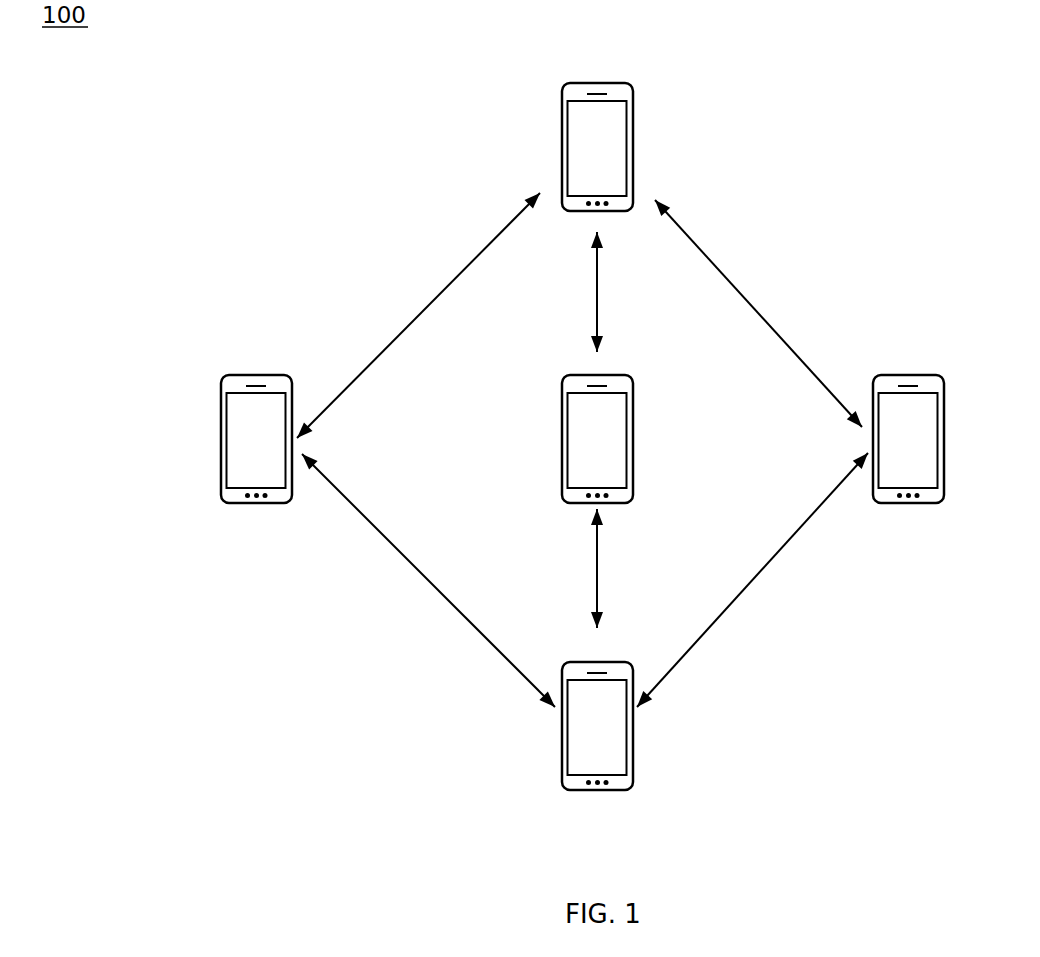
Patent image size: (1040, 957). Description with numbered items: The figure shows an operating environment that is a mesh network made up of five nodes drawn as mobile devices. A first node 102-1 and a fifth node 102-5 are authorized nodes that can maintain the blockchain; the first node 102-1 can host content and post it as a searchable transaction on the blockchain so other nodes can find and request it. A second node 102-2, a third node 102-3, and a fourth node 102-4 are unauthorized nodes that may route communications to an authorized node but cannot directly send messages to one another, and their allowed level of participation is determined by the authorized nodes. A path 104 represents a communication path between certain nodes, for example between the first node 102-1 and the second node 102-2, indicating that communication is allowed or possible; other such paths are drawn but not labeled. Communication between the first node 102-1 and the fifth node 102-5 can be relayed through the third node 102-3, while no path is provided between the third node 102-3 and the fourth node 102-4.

The first node 102-1 is at (628, 83).
The second node 102-2 is at (287, 378).
The third node 102-3 is at (628, 375).
The fourth node 102-4 is at (938, 378).
The fifth node 102-5 is at (628, 662).
The path 104 is at (448, 284).